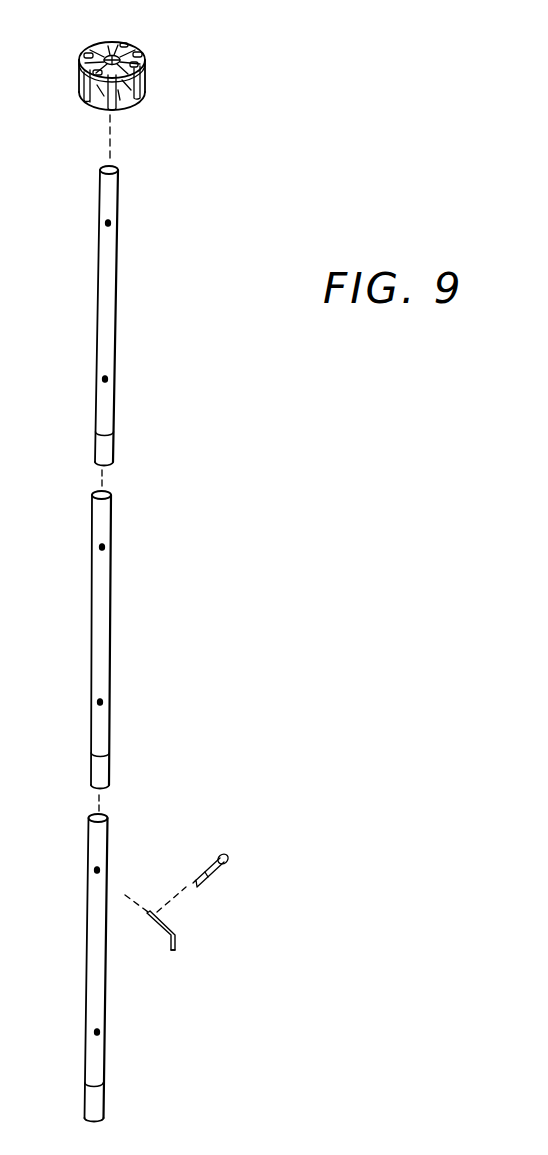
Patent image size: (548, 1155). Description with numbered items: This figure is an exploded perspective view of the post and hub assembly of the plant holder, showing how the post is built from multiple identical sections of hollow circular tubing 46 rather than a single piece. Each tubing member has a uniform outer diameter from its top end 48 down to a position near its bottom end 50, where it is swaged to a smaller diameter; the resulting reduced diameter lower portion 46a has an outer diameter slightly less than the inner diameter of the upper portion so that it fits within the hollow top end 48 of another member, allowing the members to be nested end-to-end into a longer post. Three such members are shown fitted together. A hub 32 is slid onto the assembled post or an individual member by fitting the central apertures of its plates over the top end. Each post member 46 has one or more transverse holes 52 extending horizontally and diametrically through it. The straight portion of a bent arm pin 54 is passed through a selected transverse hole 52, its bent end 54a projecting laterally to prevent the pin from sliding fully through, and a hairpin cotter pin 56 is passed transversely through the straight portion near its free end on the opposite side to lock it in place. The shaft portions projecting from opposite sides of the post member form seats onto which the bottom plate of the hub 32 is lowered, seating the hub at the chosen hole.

The hub 32 is at (154, 68).
The top end 48 is at (111, 172).
The hollow circular tubing 46 is at (155, 462).
The reduced diameter lower portion 46a is at (114, 446).
The bottom end 50 is at (107, 465).
The transverse hole 52 is at (95, 874).
The bent arm pin 54 is at (155, 930).
The bent end 54a is at (181, 945).
The hairpin cotter pin 56 is at (230, 838).